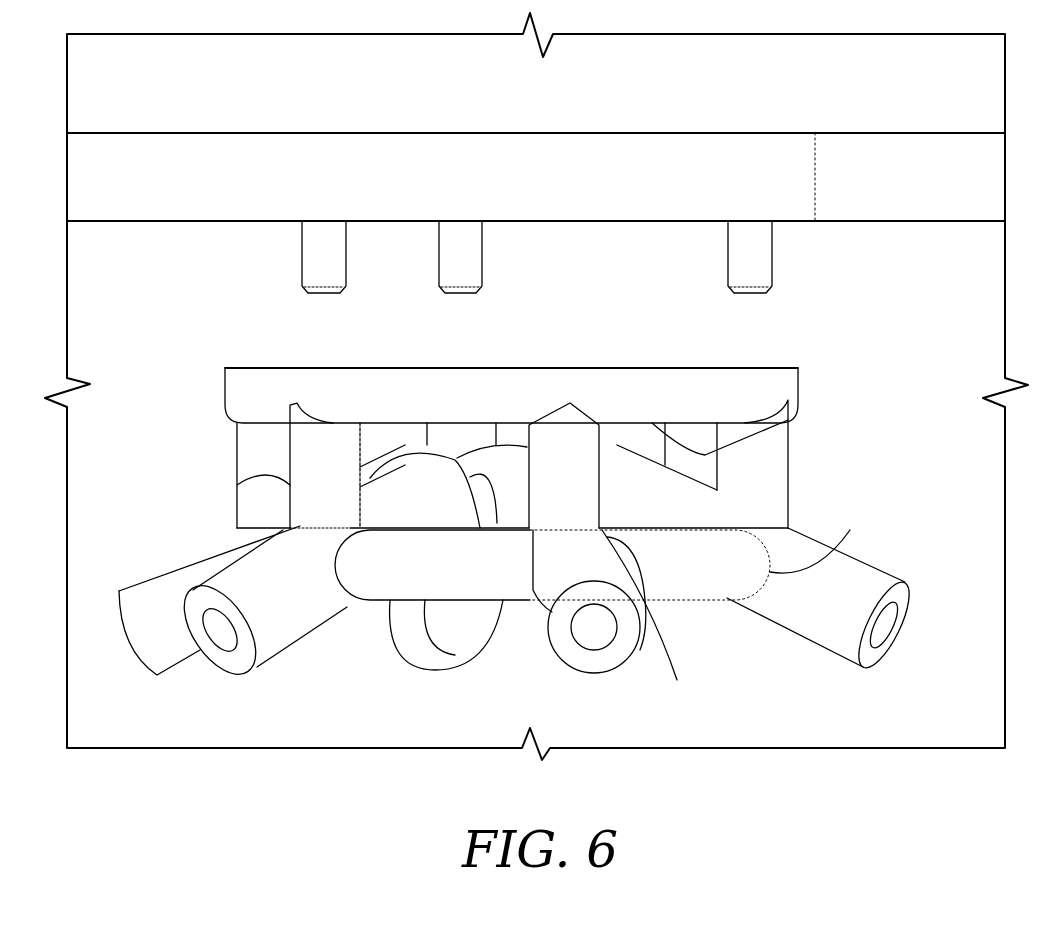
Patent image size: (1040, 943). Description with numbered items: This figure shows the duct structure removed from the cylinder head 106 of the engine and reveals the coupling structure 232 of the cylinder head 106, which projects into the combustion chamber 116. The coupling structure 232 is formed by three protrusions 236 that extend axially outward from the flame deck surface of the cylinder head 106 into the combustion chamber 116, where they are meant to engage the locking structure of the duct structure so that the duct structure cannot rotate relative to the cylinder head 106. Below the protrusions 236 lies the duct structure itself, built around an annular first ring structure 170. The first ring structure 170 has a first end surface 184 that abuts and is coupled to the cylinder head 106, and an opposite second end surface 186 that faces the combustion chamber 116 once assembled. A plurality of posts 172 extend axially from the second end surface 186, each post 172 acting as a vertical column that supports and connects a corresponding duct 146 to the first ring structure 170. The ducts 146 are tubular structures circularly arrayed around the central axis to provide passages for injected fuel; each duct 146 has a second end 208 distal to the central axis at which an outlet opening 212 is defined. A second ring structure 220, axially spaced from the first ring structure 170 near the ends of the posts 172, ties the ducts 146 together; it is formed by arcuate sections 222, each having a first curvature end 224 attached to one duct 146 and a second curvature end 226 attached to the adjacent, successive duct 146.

The cylinder head 106 is at (683, 133).
The combustion chamber 116 is at (932, 347).
The duct 146 is at (183, 658).
The first ring structure 170 is at (798, 387).
The post 172 is at (562, 463).
The first end surface 184 is at (755, 368).
The second end surface 186 is at (790, 428).
The second end 208 is at (177, 570).
The outlet opening 212 is at (222, 632).
The second ring structure 220 is at (392, 600).
The arcuate section 222 is at (425, 655).
The first curvature end 224 is at (820, 552).
The second curvature end 226 is at (228, 560).
The coupling structure 232 is at (302, 255).
The protrusion 236 is at (302, 275).